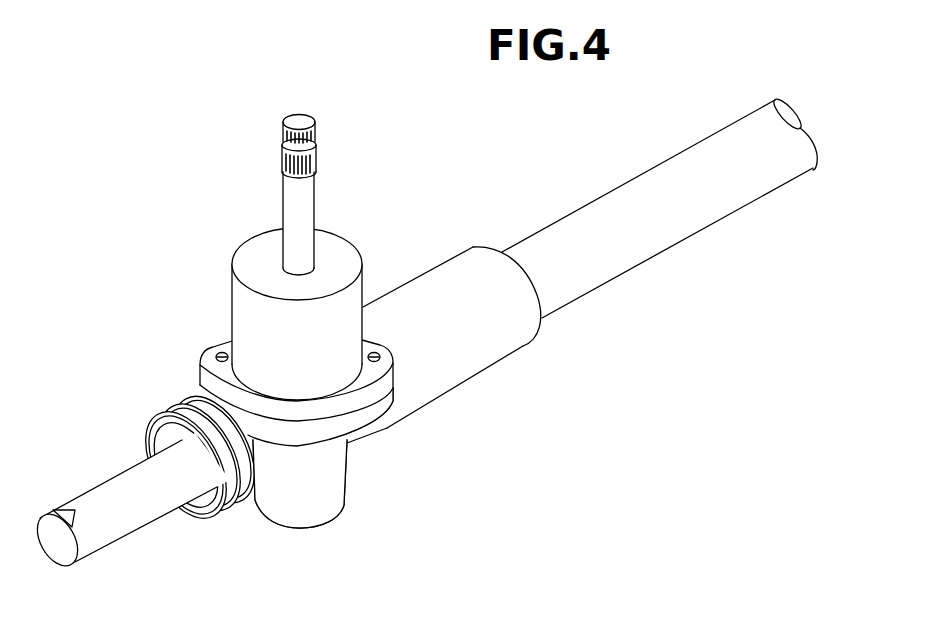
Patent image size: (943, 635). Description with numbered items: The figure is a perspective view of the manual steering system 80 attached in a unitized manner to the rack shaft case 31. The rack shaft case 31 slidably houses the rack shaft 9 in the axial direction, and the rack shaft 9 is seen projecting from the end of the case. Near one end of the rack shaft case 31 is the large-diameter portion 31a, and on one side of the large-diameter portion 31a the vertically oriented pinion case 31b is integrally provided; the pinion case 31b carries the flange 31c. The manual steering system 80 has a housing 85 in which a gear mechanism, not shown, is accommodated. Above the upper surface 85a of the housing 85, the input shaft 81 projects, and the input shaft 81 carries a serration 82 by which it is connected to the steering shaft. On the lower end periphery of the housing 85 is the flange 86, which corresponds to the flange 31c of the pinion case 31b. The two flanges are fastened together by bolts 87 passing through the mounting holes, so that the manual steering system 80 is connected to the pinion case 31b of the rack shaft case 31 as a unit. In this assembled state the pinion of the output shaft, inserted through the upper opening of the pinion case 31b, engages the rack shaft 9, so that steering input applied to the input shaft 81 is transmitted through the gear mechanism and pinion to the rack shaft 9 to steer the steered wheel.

The rack shaft 9 is at (125, 490).
The rack shaft case 31 is at (685, 223).
The large-diameter portion 31a is at (468, 368).
The pinion case 31b is at (315, 513).
The flange 31c is at (372, 413).
The manual steering system 80 is at (291, 250).
The input shaft 81 is at (305, 198).
The serration 82 is at (315, 133).
The housing 85 is at (240, 307).
The upper surface 85a is at (340, 257).
The flange 86 is at (397, 373).
The bolts 87 is at (218, 352).